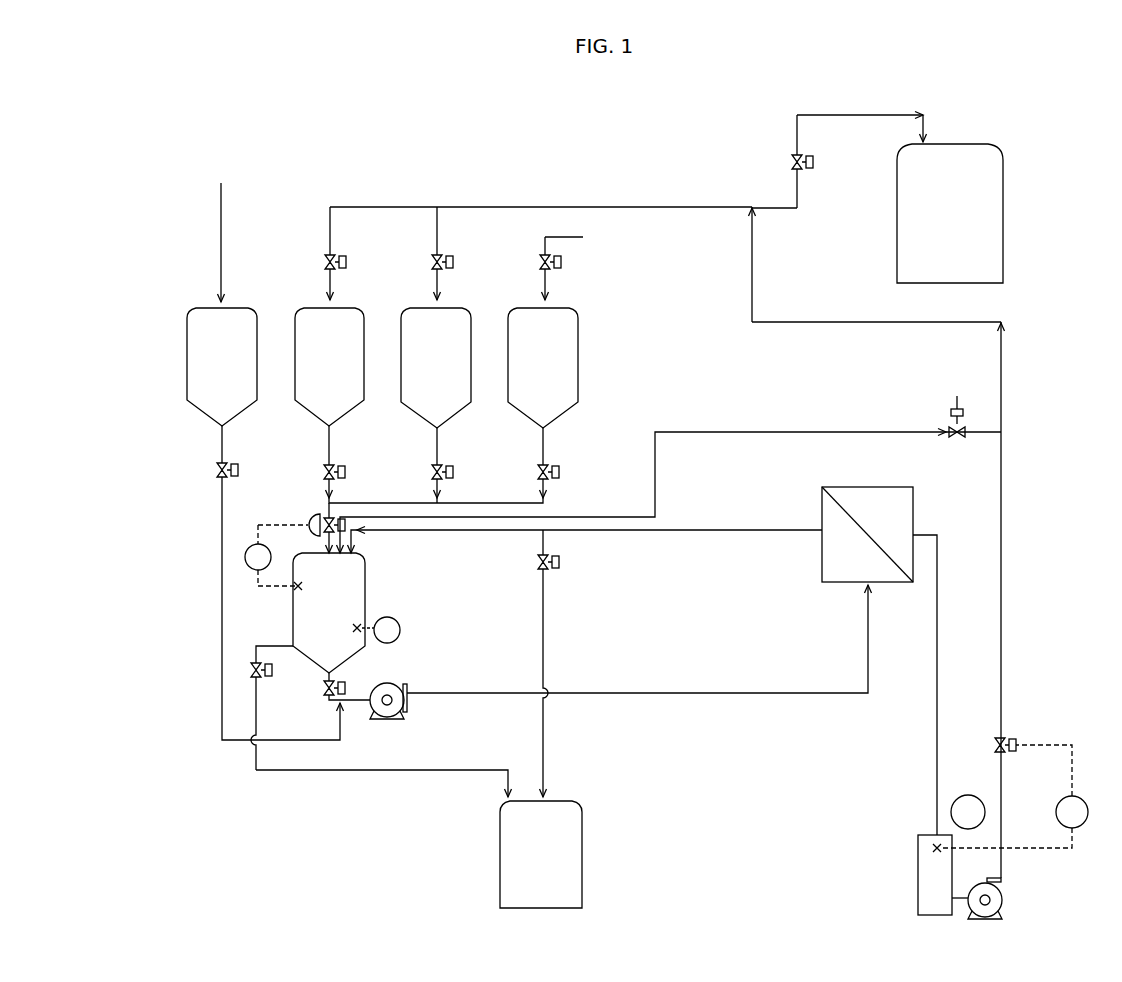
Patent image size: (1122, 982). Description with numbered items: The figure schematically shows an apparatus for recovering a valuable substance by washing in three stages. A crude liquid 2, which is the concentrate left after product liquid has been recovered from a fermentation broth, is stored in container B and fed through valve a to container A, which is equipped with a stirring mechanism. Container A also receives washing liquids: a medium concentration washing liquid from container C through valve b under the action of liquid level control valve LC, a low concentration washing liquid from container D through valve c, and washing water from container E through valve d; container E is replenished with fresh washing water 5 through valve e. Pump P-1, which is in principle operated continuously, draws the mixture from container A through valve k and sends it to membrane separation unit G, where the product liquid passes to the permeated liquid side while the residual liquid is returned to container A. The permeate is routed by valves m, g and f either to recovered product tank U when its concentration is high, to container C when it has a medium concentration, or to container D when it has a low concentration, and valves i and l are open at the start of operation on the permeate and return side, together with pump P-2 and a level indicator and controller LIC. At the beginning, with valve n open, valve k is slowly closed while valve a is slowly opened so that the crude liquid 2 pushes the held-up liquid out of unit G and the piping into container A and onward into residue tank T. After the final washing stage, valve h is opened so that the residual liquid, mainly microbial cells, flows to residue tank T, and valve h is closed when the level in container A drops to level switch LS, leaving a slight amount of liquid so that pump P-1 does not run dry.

The crude liquid 2 is at (219, 231).
The washing liquid 5 is at (572, 238).
The container B is at (191, 318).
The container C is at (299, 318).
The container D is at (405, 318).
The container E is at (512, 318).
The container A is at (366, 597).
The membrane separation unit G is at (850, 487).
The recovered product tank U is at (948, 147).
The residue tank T is at (546, 800).
The valve a is at (239, 463).
The valve b is at (345, 462).
The valve c is at (453, 463).
The valve d is at (560, 463).
The valve e is at (561, 268).
The valve f is at (452, 253).
The valve g is at (346, 253).
The valve h is at (559, 663).
The valve i is at (1005, 735).
The valve k is at (347, 683).
The valve l is at (957, 415).
The valve m is at (816, 161).
The valve n is at (272, 708).
The liquid level control valve LC is at (313, 519).
The level indicator and controller LIC is at (615, 677).
The level switch LS is at (720, 732).
The pump P-1 is at (378, 716).
The pump P-2 is at (988, 925).